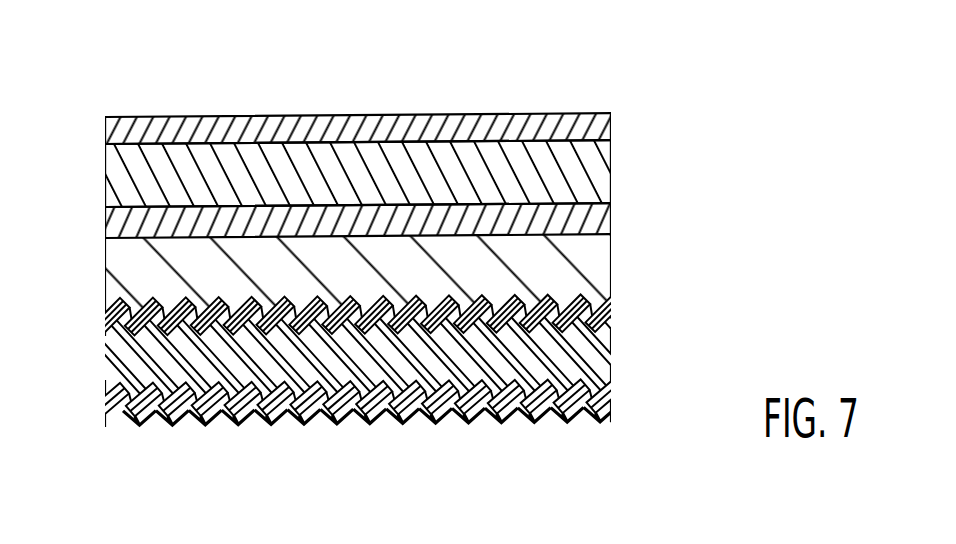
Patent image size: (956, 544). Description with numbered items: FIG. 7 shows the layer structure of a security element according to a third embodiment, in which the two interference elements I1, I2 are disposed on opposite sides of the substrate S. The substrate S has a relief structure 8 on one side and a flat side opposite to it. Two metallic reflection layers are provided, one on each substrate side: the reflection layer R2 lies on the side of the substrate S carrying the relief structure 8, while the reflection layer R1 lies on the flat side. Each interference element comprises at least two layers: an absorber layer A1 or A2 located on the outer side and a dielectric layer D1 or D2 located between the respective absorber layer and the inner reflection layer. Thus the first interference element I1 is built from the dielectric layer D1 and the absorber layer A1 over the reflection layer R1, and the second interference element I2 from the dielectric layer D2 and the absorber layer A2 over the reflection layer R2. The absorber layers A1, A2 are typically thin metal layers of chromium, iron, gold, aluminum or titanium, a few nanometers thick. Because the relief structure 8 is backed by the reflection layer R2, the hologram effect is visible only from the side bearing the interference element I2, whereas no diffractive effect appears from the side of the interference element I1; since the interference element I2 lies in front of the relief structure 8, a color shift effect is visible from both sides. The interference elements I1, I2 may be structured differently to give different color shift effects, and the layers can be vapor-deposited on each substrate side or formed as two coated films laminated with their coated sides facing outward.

The absorber layer A1 is at (137, 128).
The dielectric layer D1 is at (140, 178).
The reflection layer R1 is at (323, 227).
The substrate S is at (585, 257).
The relief structure 8 is at (357, 352).
The reflection layer R2 is at (125, 312).
The dielectric layer D2 is at (150, 355).
The absorber layer A2 is at (342, 410).
The interference element I1 is at (377, 174).
The interference element I2 is at (377, 352).